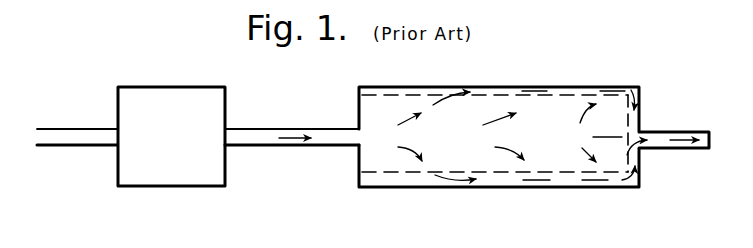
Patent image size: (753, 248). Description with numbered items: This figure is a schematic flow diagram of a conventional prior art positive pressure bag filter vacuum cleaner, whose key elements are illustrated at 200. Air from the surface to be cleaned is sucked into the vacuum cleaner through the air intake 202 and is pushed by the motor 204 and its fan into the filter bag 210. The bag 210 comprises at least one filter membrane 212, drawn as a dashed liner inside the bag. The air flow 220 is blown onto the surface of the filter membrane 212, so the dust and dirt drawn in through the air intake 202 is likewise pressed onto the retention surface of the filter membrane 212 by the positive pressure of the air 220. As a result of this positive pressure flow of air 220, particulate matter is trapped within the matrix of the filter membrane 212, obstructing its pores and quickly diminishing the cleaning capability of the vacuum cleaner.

The prior art positive pressure bag filter vacuum cleaner 200 is at (321, 106).
The air intake 202 is at (67, 133).
The motor 204 is at (158, 95).
The filter bag 210 is at (552, 145).
The filter membrane 212 is at (418, 92).
The air flow 220 is at (522, 135).